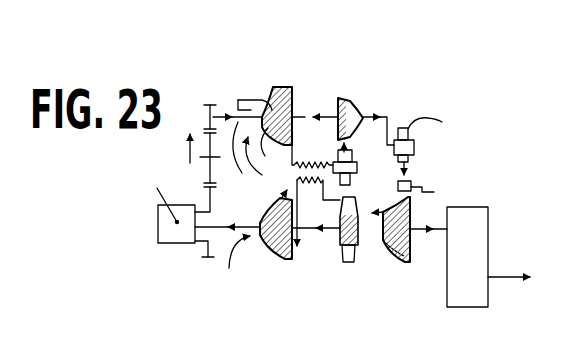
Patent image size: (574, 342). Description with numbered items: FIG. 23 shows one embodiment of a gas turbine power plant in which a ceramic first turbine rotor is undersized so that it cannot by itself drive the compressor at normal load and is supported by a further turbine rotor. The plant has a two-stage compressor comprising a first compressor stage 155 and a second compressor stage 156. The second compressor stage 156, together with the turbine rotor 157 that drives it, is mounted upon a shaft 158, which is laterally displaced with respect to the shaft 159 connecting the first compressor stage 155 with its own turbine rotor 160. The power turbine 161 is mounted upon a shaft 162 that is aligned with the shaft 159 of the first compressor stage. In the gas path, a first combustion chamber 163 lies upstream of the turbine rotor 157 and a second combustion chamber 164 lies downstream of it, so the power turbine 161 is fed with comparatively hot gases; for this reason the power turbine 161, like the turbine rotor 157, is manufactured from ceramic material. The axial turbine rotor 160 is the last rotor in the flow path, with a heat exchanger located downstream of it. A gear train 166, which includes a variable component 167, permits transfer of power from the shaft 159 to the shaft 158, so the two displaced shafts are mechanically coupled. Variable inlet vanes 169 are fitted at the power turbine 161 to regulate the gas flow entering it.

The first compressor stage 155 is at (272, 246).
The second compressor stage 156 is at (276, 105).
The turbine rotor 157 is at (308, 164).
The shaft 158 is at (305, 115).
The shaft 159 is at (330, 230).
The turbine rotor 160 is at (358, 252).
The power turbine 161 is at (411, 210).
The shaft 162 is at (437, 231).
The first combustion chamber 163 is at (353, 149).
The second combustion chamber 164 is at (398, 128).
The gear train 166 is at (207, 182).
The variable component 167 is at (167, 228).
The variable inlet vanes 169 is at (412, 181).